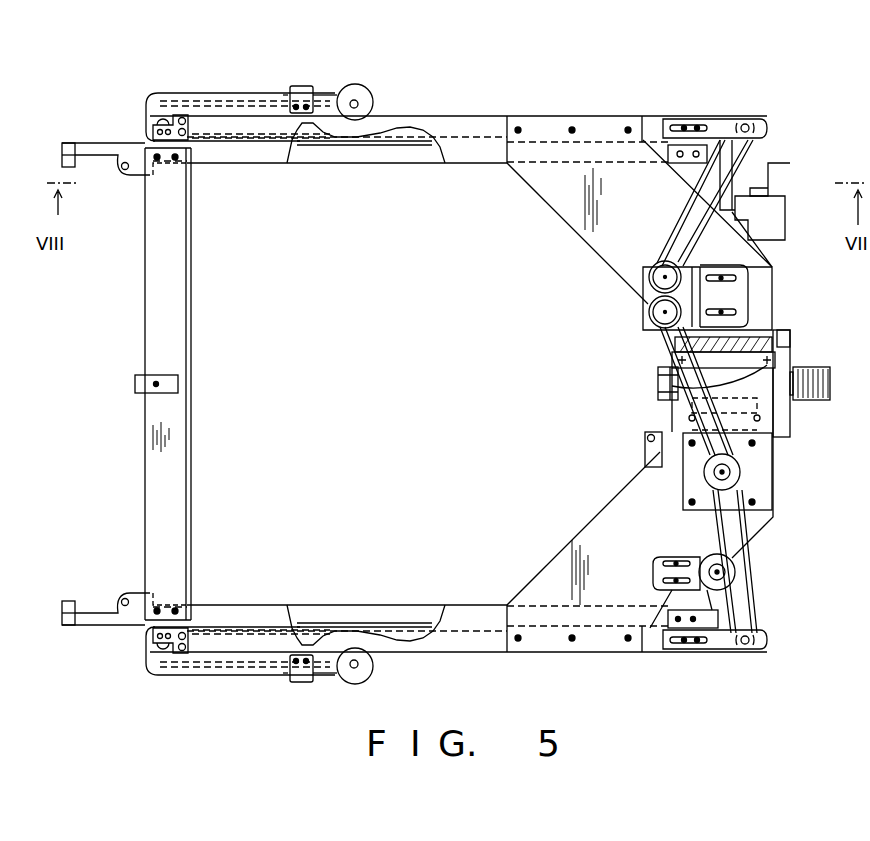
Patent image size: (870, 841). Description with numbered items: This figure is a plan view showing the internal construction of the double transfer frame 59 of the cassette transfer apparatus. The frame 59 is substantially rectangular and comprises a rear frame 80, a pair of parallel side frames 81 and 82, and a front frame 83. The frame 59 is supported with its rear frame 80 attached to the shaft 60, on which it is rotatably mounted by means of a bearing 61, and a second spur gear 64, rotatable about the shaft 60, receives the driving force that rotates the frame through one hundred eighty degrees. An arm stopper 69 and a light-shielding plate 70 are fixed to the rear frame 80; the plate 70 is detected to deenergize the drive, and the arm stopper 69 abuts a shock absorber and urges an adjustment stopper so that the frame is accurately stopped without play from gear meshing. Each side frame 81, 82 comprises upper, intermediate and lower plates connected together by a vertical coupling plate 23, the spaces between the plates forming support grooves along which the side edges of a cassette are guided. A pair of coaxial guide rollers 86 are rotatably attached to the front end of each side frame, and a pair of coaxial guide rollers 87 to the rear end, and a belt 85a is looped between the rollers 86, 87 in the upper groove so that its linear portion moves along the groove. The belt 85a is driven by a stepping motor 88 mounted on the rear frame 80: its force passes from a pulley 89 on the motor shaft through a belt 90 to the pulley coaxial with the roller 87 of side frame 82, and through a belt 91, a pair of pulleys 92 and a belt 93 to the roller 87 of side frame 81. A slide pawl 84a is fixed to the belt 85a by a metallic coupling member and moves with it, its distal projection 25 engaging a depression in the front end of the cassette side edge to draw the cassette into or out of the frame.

The slide pawl 84a is at (78, 143).
The guide rollers 86 is at (143, 120).
The projection 25 is at (60, 158).
The double transfer frame 59 is at (247, 82).
The vertical coupling plate 23 is at (303, 82).
The belt 85a is at (413, 140).
The side frame 81 is at (481, 122).
The side frame 82 is at (490, 648).
The front frame 83 is at (152, 323).
The guide rollers 87 is at (742, 118).
The light-shielding plate 70 is at (787, 163).
The arm stopper 69 is at (782, 222).
The belt 93 is at (673, 224).
The rear frame 80 is at (760, 285).
The pulleys 92 is at (645, 317).
The belt 91 is at (665, 358).
The bearing 61 is at (680, 378).
The shaft 60 is at (815, 367).
The second spur gear 64 is at (780, 433).
The pulley 89 is at (740, 471).
The stepping motor 88 is at (760, 496).
The belt 90 is at (740, 573).